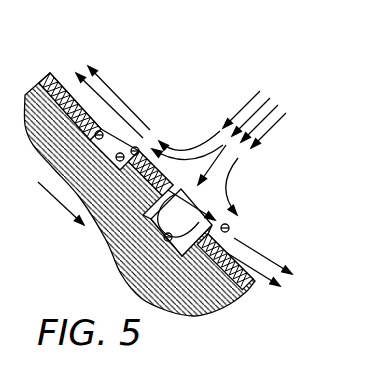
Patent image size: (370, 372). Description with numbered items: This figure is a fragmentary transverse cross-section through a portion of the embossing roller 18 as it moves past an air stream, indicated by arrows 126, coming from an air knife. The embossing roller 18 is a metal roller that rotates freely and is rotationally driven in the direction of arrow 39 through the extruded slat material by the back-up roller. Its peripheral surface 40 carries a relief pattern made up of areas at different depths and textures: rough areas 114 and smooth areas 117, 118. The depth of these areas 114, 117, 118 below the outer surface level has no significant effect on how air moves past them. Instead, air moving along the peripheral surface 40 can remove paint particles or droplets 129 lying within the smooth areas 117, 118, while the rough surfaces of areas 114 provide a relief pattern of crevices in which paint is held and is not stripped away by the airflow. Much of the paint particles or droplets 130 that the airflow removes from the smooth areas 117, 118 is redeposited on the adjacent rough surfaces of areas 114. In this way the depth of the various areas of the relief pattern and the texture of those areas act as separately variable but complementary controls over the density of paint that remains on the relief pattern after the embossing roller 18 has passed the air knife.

The embossing roller 18 is at (204, 308).
The arrow (direction of rotation) 39 is at (48, 193).
The peripheral surface 40 is at (50, 70).
The areas (rough surfaces) 114 is at (87, 82).
The area (smooth) 117 is at (178, 132).
The area (smooth) 118 is at (193, 185).
The arrows (air stream) 126 is at (259, 126).
The paint particles or droplets 129 is at (88, 128).
The paint particles or droplets (removed) 130 is at (222, 219).